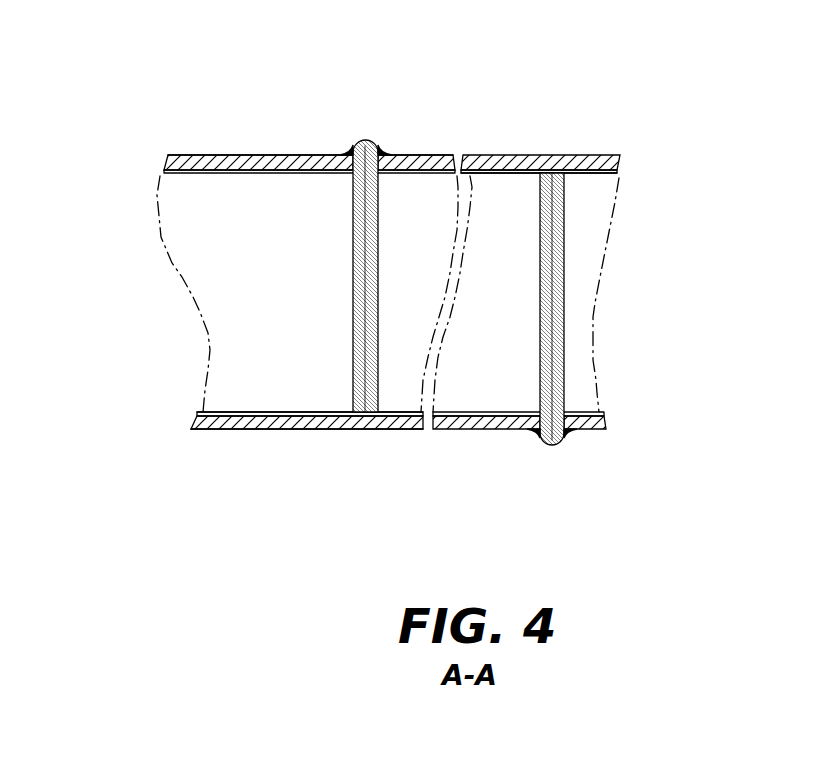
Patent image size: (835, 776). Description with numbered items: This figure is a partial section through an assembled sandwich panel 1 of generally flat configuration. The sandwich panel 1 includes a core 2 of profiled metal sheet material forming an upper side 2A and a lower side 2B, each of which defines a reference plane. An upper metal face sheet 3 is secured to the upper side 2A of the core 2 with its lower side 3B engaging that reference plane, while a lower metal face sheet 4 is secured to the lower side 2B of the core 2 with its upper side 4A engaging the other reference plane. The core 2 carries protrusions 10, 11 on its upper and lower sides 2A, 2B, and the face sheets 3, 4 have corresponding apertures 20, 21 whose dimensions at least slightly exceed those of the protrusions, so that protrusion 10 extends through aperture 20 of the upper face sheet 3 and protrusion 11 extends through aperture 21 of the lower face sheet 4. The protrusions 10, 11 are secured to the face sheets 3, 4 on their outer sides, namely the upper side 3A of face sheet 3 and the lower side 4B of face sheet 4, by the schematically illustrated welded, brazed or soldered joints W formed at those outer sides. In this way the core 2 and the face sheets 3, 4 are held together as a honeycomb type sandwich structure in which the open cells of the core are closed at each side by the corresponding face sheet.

The sandwich panel 1 is at (635, 108).
The core 2 is at (300, 352).
The upper side of core 2A is at (507, 175).
The lower side of core 2B is at (393, 431).
The metal face sheet 3 is at (168, 162).
The upper side of face sheet 3A is at (232, 155).
The lower side of face sheet 3B is at (593, 176).
The metal face sheet 4 is at (330, 431).
The upper side of face sheet 4A is at (212, 414).
The lower side of face sheet 4B is at (205, 413).
The protrusion 10 is at (356, 148).
The protrusion 11 is at (562, 445).
The aperture 20 is at (348, 163).
The aperture 21 is at (570, 420).
The welded, brazed or soldered joint W is at (382, 146).